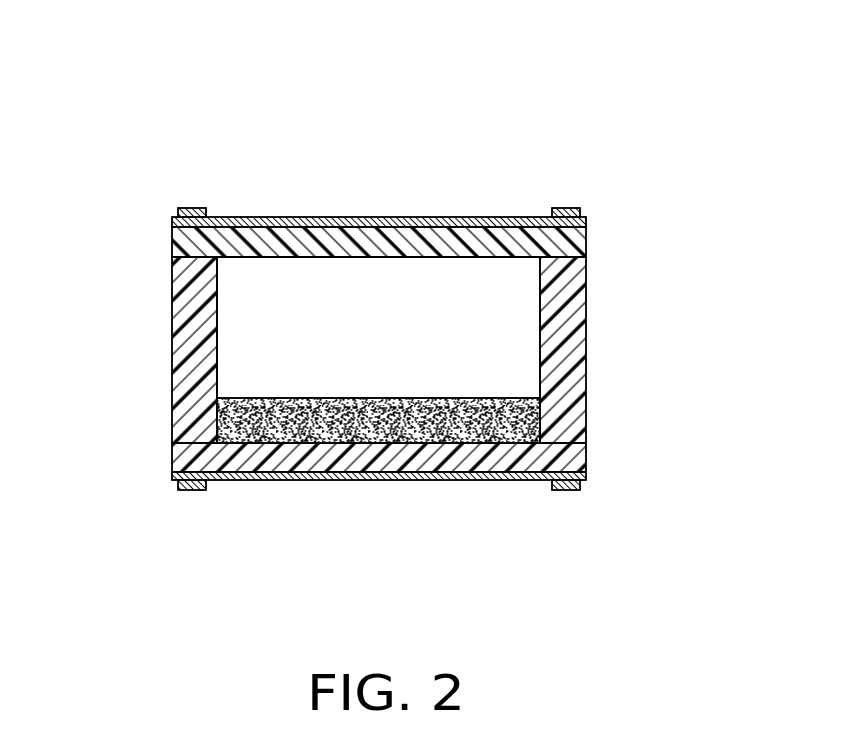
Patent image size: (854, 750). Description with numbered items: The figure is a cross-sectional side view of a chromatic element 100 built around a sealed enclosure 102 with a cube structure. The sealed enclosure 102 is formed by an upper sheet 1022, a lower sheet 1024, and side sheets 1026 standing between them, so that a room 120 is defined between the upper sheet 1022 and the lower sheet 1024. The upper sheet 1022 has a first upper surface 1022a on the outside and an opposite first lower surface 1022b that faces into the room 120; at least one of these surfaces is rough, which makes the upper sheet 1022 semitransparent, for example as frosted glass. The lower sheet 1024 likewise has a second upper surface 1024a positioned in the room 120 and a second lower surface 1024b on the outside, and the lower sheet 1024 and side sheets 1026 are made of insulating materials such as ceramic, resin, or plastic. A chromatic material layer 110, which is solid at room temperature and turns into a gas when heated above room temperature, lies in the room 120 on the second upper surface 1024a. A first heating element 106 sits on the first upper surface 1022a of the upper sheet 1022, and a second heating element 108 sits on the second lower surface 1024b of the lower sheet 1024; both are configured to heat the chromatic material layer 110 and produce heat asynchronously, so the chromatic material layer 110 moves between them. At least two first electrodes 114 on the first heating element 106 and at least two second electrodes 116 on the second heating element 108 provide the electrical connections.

The chromatic element 100 is at (403, 87).
The sealed enclosure 102 is at (700, 233).
The upper sheet 1022 is at (587, 251).
The first upper surface 1022a is at (320, 219).
The first lower surface 1022b is at (263, 257).
The lower sheet 1024 is at (586, 453).
The second upper surface 1024a is at (195, 442).
The second lower surface 1024b is at (302, 481).
The side sheets 1026 is at (568, 313).
The first heating element 106 is at (477, 217).
The second heating element 108 is at (452, 480).
The chromatic material layer 110 is at (232, 413).
The first electrodes 114 is at (188, 208).
The second electrodes 116 is at (178, 488).
The room 120 is at (250, 316).